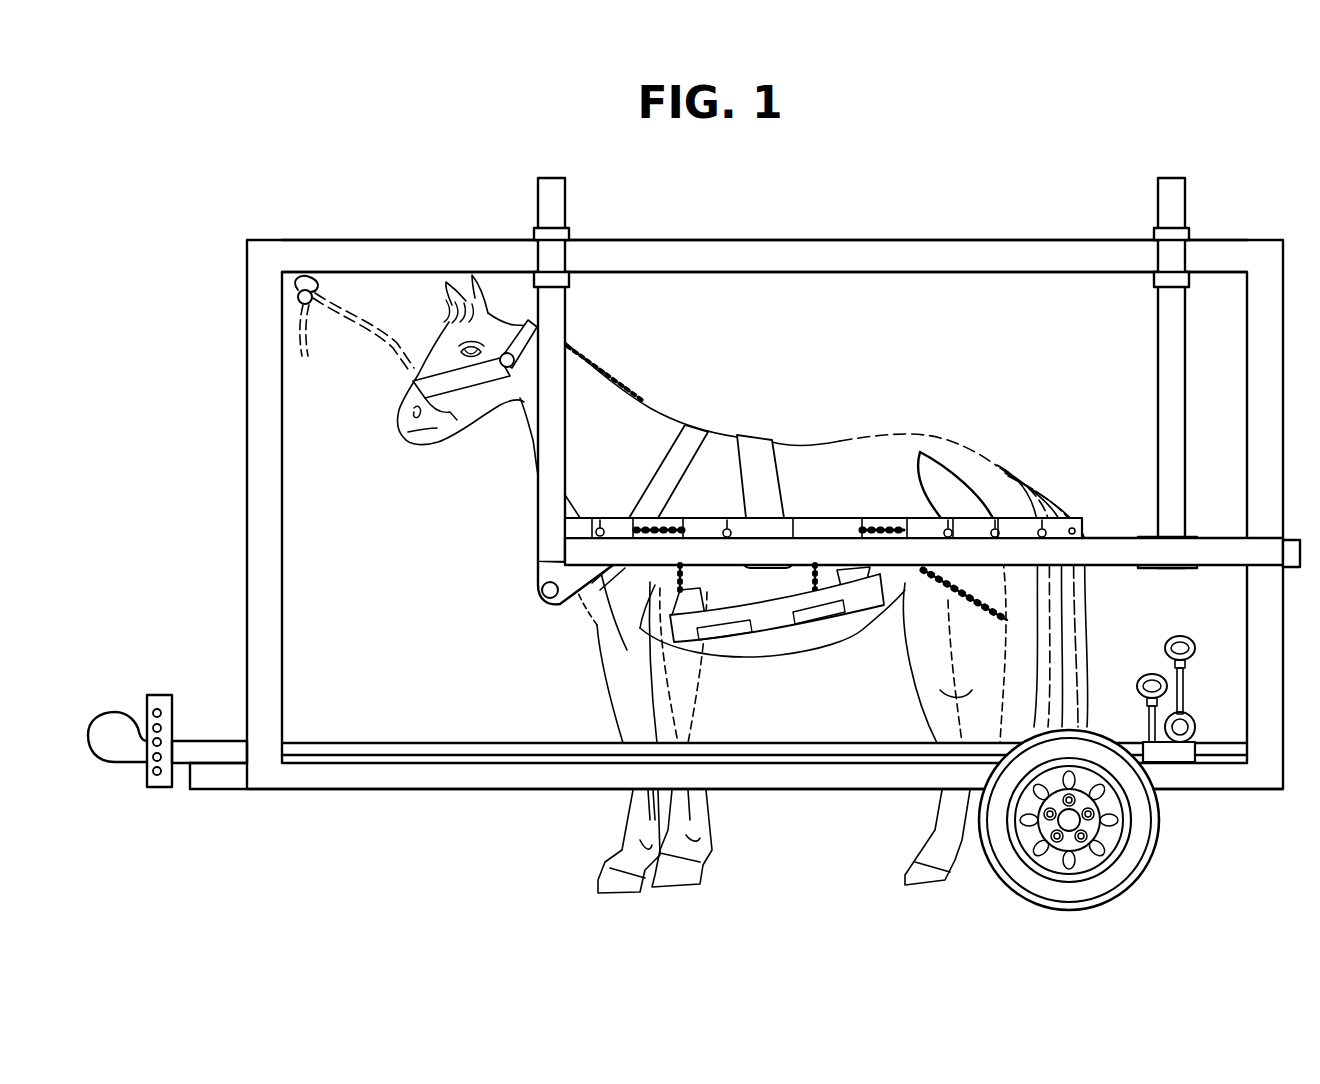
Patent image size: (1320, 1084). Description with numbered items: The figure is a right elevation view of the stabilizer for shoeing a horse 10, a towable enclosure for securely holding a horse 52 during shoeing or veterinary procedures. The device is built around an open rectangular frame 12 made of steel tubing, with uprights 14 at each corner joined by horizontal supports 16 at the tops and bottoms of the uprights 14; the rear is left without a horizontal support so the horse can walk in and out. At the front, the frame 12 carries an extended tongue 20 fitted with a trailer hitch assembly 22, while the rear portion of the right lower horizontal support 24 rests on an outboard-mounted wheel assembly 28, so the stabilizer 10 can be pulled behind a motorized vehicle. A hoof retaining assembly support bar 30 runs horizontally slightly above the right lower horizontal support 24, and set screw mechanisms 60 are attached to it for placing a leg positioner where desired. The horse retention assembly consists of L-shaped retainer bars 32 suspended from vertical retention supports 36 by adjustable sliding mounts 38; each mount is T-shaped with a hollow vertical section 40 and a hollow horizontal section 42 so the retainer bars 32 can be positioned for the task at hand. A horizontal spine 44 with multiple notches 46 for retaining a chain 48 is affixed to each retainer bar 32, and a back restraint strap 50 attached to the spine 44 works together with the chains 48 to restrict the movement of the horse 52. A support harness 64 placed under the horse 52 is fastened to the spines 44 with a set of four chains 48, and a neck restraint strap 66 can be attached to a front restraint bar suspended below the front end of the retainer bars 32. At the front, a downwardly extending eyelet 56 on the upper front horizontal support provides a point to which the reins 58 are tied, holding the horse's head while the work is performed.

The stabilizer for shoeing a horse 10 is at (376, 146).
The open rectangular frame 12 is at (714, 536).
The uprights 14 is at (262, 322).
The horizontal supports 16 is at (945, 262).
The extended tongue 20 is at (180, 789).
The trailer hitch assembly 22 is at (118, 714).
The right lower horizontal support 24 is at (345, 790).
The wheel assemblies 28 is at (1122, 857).
The hoof retaining assembly support bar 30 is at (400, 743).
The L-shaped retainer bars 32 is at (1285, 545).
The vertical retention supports 36 is at (538, 502).
The adjustable sliding mounts 38 is at (569, 235).
The hollow vertical section 40 is at (569, 280).
The hollow horizontal section 42 is at (1140, 545).
The horizontal spine 44 is at (1050, 520).
The notches 46 is at (920, 452).
The chain 48 is at (900, 612).
The back restraint strap 50 is at (760, 437).
The horse 52 is at (843, 453).
The eyelet 56 is at (312, 290).
The reins 58 is at (350, 330).
The set screw mechanisms 60 is at (1186, 705).
The support harness 64 is at (770, 625).
The neck restraint strap 66 is at (700, 428).